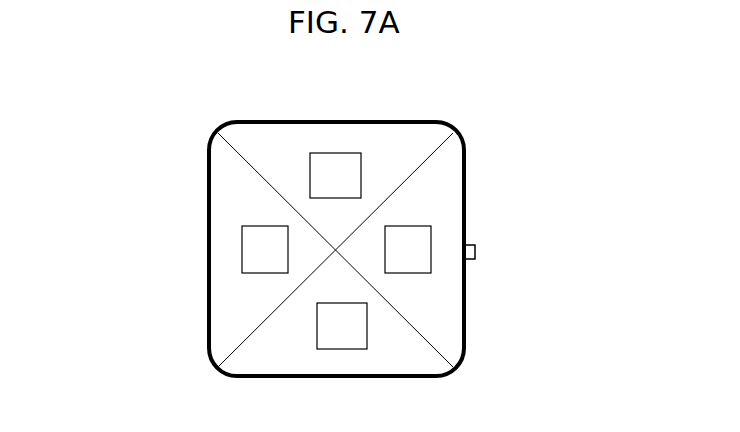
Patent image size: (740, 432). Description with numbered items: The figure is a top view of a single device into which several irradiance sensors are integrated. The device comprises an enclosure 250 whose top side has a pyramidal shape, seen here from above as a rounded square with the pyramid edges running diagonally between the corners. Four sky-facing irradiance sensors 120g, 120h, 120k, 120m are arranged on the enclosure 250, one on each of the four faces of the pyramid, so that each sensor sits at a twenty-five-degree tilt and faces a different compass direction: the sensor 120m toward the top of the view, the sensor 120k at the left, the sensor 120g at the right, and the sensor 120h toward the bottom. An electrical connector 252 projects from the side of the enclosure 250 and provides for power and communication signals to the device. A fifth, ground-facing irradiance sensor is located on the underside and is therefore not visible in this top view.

The enclosure 250 is at (439, 117).
The electrical connector 252 is at (482, 251).
The sky-facing irradiance sensor 120m is at (309, 149).
The sky-facing irradiance sensor 120k is at (239, 249).
The sky-facing irradiance sensor 120g is at (434, 236).
The sky-facing irradiance sensor 120h is at (315, 331).